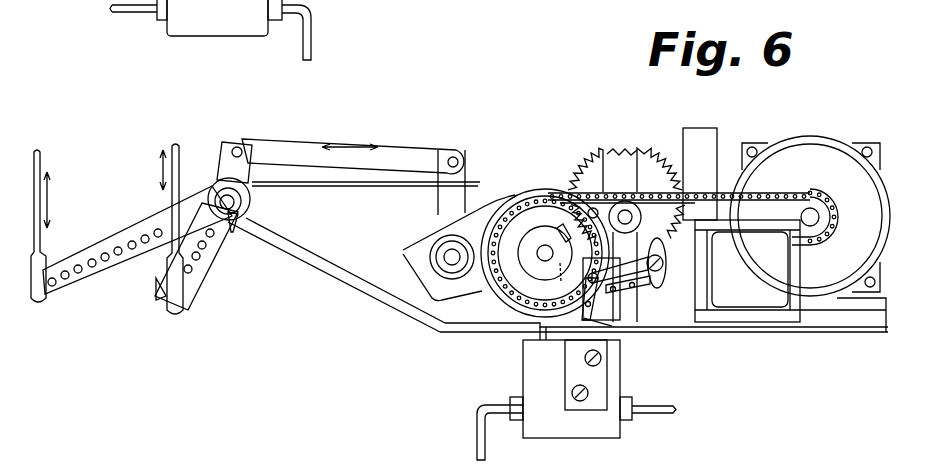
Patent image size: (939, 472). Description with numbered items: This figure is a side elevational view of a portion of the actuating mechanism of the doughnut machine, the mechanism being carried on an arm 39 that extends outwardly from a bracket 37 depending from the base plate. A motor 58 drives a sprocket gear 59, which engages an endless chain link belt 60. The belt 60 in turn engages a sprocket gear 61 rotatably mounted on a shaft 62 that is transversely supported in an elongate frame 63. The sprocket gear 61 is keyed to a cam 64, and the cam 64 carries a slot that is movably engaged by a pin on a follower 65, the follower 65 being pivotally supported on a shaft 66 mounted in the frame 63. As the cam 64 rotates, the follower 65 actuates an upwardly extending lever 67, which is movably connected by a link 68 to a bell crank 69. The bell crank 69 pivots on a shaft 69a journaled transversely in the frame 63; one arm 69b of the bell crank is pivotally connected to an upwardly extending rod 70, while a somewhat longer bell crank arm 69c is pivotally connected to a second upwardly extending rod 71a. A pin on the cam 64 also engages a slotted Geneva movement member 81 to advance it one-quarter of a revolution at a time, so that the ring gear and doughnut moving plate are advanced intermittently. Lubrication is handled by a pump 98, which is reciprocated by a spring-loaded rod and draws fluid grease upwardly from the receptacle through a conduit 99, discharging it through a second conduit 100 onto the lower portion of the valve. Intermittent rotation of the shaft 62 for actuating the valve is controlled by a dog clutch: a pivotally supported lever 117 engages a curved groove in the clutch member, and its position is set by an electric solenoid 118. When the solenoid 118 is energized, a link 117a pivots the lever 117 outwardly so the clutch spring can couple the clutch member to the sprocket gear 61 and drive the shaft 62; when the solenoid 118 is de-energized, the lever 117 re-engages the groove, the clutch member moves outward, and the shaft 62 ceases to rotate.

The second bracket 37 is at (610, 379).
The arm 39 is at (712, 333).
The motor 58 is at (822, 166).
The sprocket gear 59 is at (828, 227).
The endless chain link belt 60 is at (757, 192).
The sprocket gear 61 is at (547, 297).
The shaft 62 is at (537, 252).
The elongate frame 63 is at (358, 261).
The cam 64 is at (500, 297).
The follower 65 is at (487, 229).
The shaft 66 is at (452, 266).
The lever 67 is at (437, 199).
The link 68 is at (397, 151).
The bell crank 69 is at (240, 210).
The shaft 69a is at (232, 234).
The bell crank arm 69b is at (210, 272).
The bell crank arm 69c is at (100, 278).
The rod 70 is at (181, 172).
The rod 71a is at (43, 248).
The Geneva movement member 81 is at (654, 193).
The pump 98 is at (577, 436).
The conduit 99 is at (313, 27).
The second conduit 100 is at (130, 12).
The lever 117 is at (575, 226).
The link 117a is at (637, 284).
The solenoid 118 is at (757, 272).